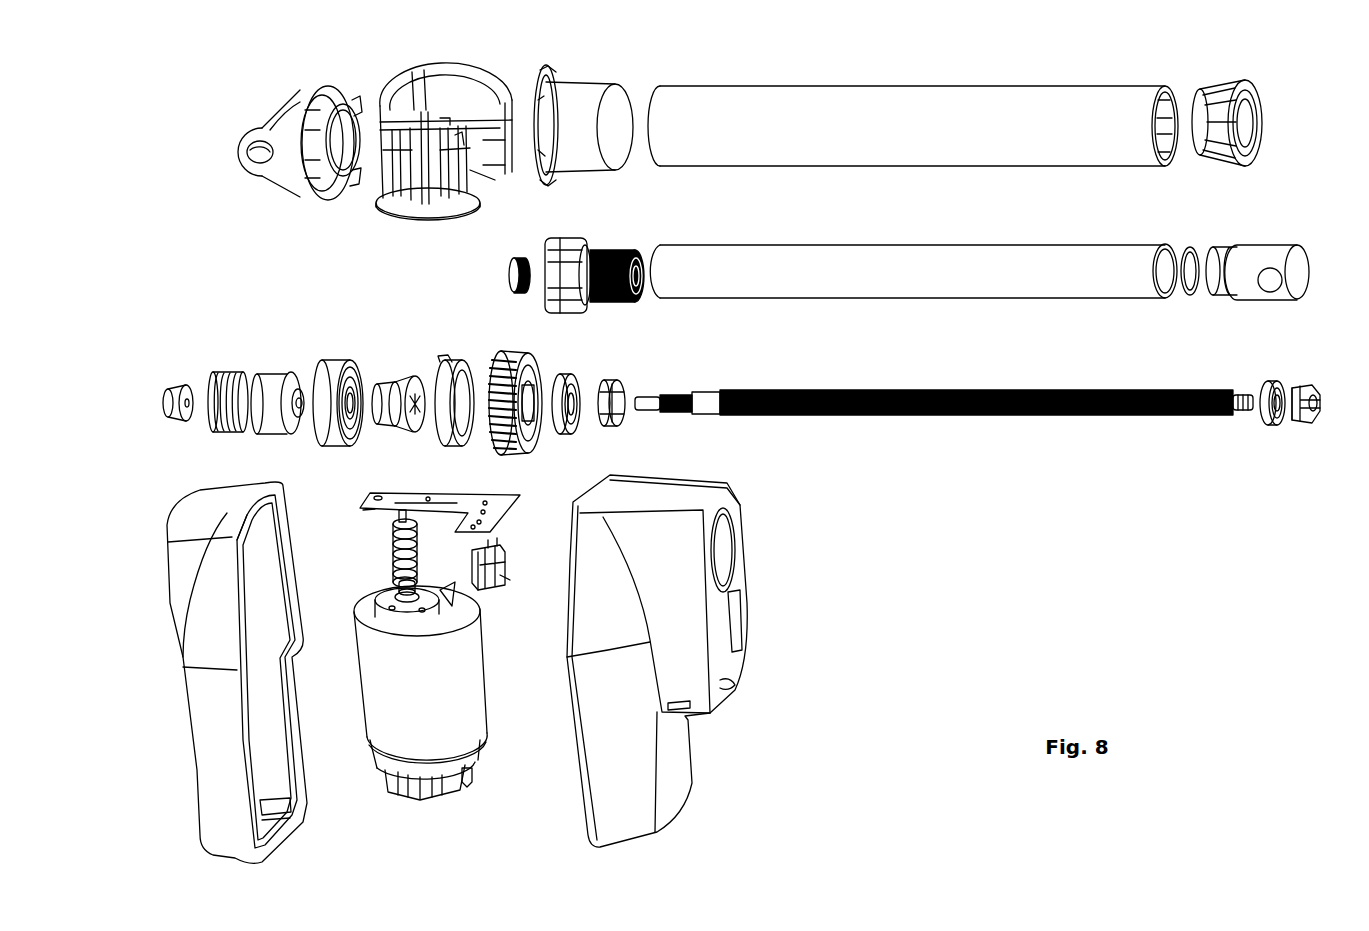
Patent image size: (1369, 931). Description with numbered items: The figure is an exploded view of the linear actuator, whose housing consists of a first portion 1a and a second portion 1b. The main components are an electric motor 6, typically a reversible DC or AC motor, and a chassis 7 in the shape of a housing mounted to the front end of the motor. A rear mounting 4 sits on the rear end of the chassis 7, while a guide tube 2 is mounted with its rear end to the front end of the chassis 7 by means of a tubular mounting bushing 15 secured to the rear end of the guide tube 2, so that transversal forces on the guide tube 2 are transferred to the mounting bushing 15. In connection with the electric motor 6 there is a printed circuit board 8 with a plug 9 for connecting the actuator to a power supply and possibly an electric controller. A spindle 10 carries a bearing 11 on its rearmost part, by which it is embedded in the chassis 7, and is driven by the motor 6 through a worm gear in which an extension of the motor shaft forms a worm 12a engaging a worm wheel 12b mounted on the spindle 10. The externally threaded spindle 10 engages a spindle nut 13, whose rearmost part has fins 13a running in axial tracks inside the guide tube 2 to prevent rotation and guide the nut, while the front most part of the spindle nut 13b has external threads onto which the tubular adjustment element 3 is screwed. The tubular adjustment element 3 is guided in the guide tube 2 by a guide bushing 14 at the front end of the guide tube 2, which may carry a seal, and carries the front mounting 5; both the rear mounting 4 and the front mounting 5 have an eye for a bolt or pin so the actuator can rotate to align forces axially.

The first portion 1a is at (208, 730).
The second portion 1b is at (675, 743).
The guide tube 2 is at (850, 146).
The tubular adjustment element 3 is at (787, 278).
The rear mounting 4 is at (272, 137).
The front mounting 5 is at (1292, 269).
The electric motor 6 is at (407, 680).
The chassis 7 is at (405, 208).
The printed circuit board 8 is at (493, 503).
The plug 9 is at (497, 587).
The spindle 10 is at (943, 417).
The bearing 11 is at (330, 377).
The worm 12a is at (395, 545).
The worm wheel 12b is at (498, 357).
The spindle nut 13 is at (582, 271).
The fins 13a is at (565, 292).
The front most part of the spindle nut 13b is at (622, 300).
The guide bushing 14 is at (1262, 132).
The mounting bushing 15 is at (580, 118).